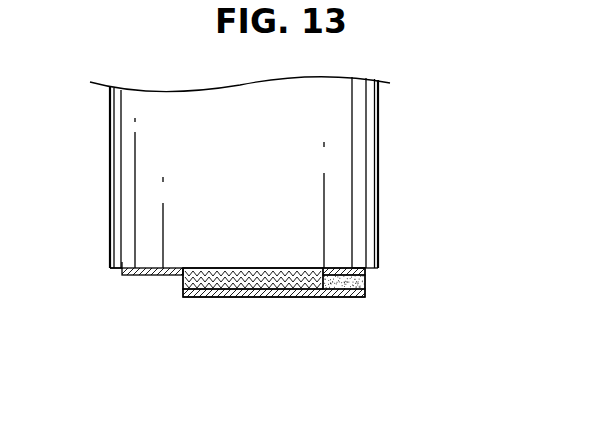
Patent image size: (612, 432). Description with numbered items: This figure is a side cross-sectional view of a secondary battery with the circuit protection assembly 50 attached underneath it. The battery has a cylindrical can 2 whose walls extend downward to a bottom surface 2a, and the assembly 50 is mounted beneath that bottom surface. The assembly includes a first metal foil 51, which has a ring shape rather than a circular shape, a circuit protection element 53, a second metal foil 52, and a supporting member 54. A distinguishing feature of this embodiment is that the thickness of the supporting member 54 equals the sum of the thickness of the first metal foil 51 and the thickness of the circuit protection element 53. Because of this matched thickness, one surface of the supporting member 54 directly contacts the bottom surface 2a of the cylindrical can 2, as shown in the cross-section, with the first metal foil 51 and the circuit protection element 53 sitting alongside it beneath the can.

The cylindrical can 2 is at (337, 131).
The bottom surface 2a is at (140, 267).
The circuit protection assembly 50 is at (475, 265).
The first metal foil 51 is at (152, 276).
The second metal foil 52 is at (355, 296).
The circuit protection element 53 is at (365, 281).
The supporting member 54 is at (298, 297).